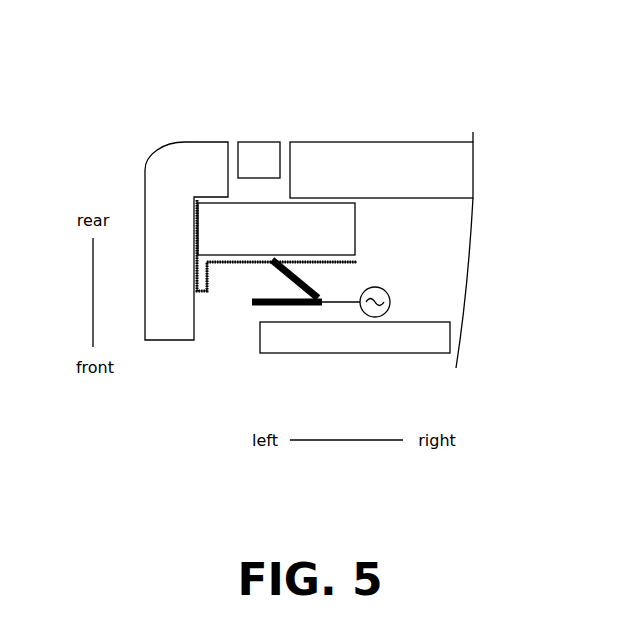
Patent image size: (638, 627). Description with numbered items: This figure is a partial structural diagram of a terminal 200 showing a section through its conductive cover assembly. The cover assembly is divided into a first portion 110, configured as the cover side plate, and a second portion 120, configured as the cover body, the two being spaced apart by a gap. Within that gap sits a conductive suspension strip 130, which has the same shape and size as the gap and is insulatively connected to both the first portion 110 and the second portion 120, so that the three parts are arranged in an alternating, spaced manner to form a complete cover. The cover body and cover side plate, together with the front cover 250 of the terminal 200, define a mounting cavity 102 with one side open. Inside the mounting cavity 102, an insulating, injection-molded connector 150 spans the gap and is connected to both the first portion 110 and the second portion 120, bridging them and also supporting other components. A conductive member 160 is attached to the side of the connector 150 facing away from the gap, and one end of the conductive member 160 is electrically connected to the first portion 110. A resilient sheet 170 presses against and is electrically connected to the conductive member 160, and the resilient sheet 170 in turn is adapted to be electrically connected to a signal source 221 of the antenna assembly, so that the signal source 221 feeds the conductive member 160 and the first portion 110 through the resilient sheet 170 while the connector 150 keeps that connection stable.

The terminal 200 is at (112, 151).
The first portion 110 is at (178, 165).
The conductive suspension strip 130 is at (255, 155).
The second portion 120 is at (338, 162).
The mounting cavity 102 is at (437, 235).
The connector 150 is at (350, 225).
The conductive member 160 is at (228, 263).
The resilient sheet 170 is at (288, 304).
The signal source 221 is at (385, 290).
The front cover 250 is at (383, 338).